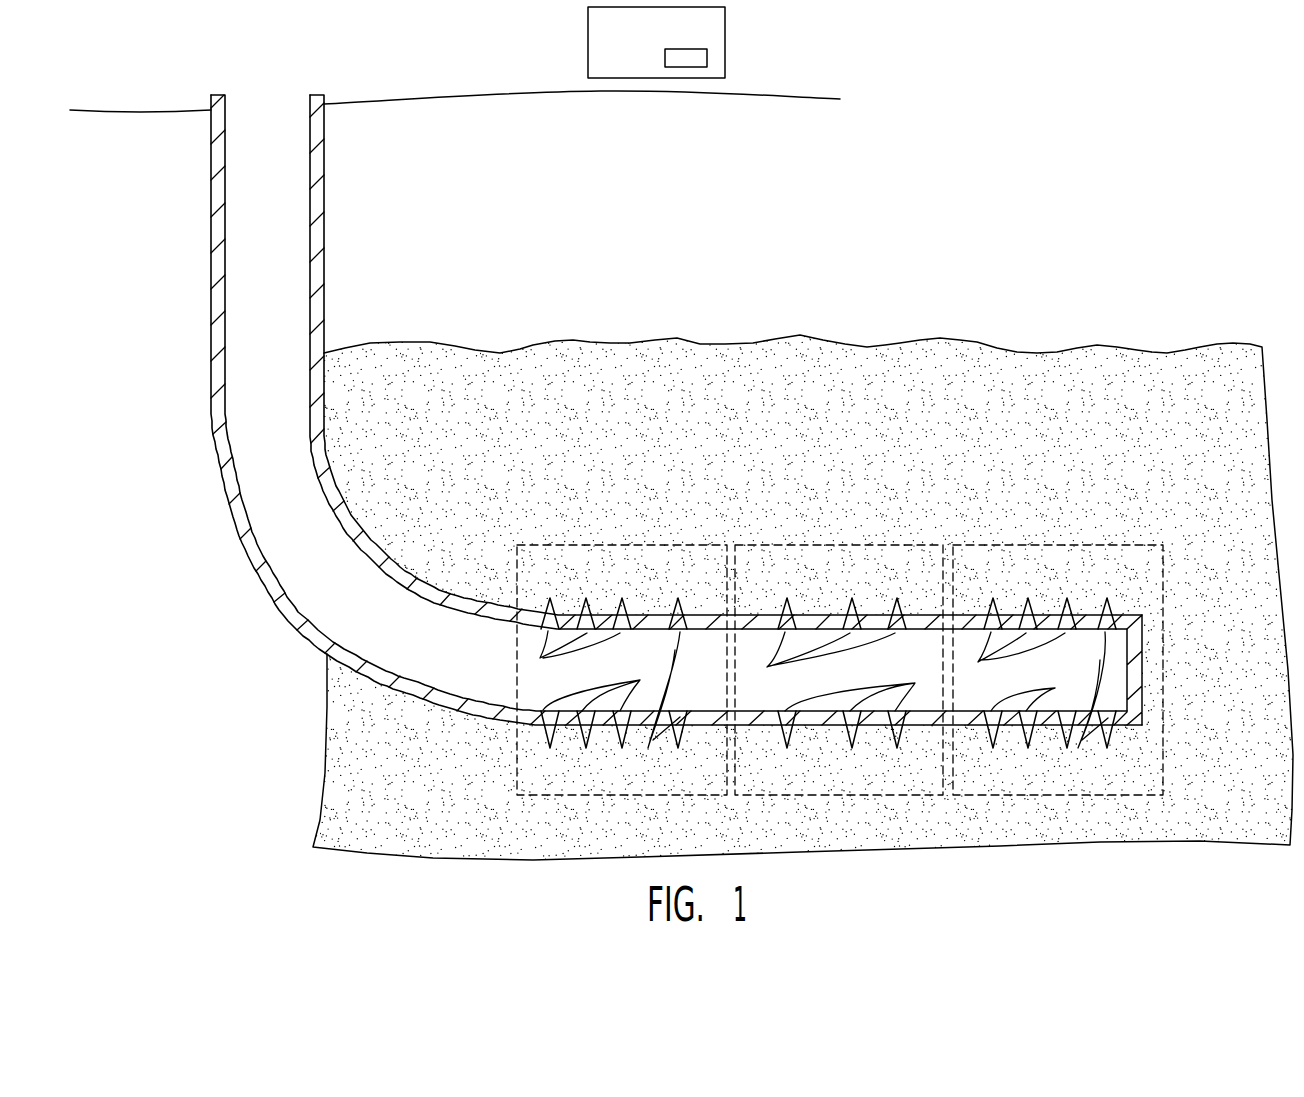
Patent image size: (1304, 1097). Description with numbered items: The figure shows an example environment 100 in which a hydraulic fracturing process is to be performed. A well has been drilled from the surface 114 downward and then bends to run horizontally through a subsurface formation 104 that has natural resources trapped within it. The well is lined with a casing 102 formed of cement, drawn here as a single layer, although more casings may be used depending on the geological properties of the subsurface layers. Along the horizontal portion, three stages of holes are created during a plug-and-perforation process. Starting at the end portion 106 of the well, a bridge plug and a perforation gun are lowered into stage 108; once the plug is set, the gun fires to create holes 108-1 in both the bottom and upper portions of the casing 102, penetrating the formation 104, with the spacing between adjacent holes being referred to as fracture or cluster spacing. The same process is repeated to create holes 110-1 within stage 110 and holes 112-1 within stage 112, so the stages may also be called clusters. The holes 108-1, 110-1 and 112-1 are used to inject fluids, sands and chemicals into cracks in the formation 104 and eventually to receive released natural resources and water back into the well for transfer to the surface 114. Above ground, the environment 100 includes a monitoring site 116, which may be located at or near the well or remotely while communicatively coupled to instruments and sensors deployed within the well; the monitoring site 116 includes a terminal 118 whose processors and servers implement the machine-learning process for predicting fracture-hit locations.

The environment 100 is at (957, 151).
The casing 102 is at (318, 275).
The subsurface formation 104 is at (993, 373).
The end portion 106 is at (1135, 669).
The stage 108 is at (1090, 545).
The holes 108-1 is at (1037, 693).
The stage 110 is at (880, 545).
The holes 110-1 is at (841, 673).
The stage 112 is at (641, 545).
The holes 112-1 is at (604, 693).
The surface 114 is at (453, 98).
The monitoring site 116 is at (727, 35).
The terminal 118 is at (708, 58).